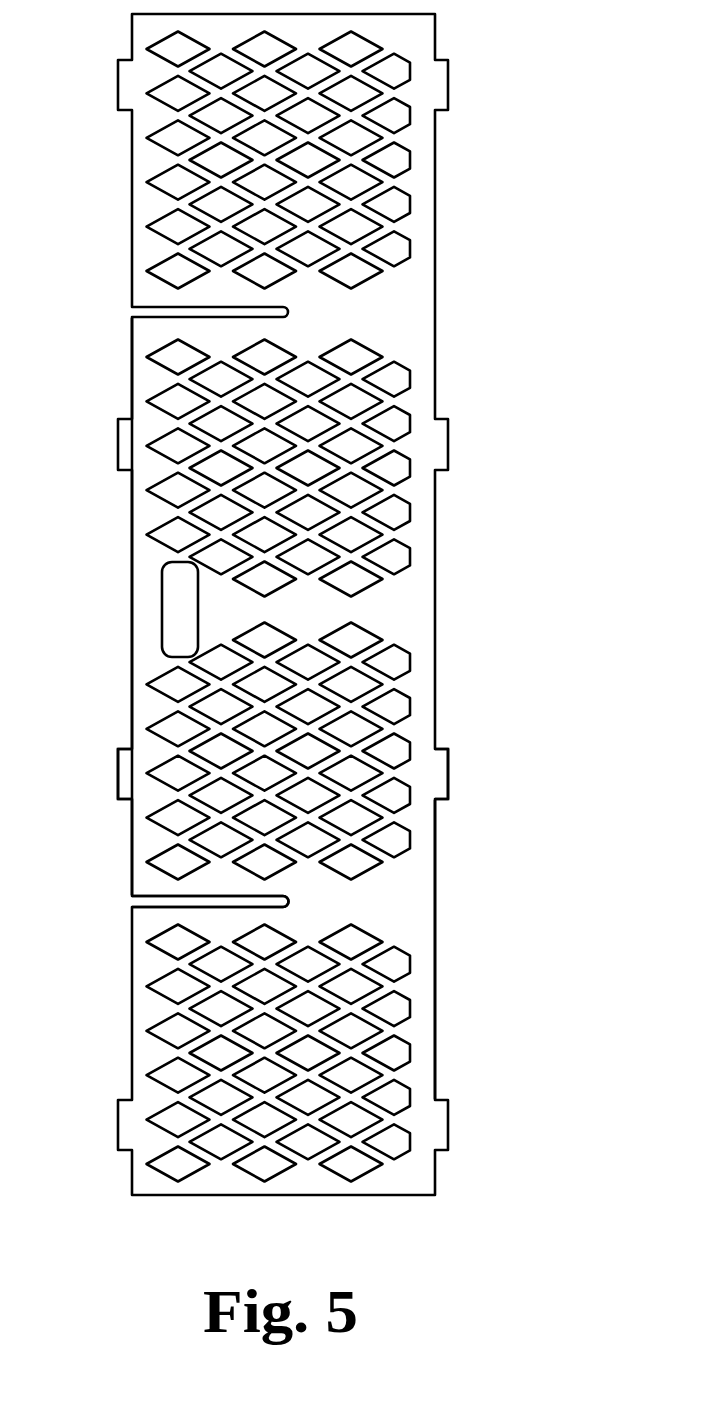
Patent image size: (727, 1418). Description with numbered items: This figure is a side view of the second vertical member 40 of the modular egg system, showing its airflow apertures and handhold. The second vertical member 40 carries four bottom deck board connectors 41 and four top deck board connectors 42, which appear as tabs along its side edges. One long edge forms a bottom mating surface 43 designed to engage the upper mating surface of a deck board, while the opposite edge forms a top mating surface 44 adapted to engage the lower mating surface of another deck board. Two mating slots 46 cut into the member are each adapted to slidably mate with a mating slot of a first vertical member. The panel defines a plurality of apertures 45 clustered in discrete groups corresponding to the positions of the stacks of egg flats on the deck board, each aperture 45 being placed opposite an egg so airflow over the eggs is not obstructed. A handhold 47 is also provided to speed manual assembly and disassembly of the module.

The second vertical member 40 is at (540, 351).
The bottom deck board connector 41 is at (437, 772).
The top deck board connector 42 is at (125, 767).
The bottom mating surface 43 is at (435, 905).
The top mating surface 44 is at (132, 527).
The aperture 45 is at (397, 669).
The mating slot 46 is at (143, 903).
The handhold 47 is at (183, 607).